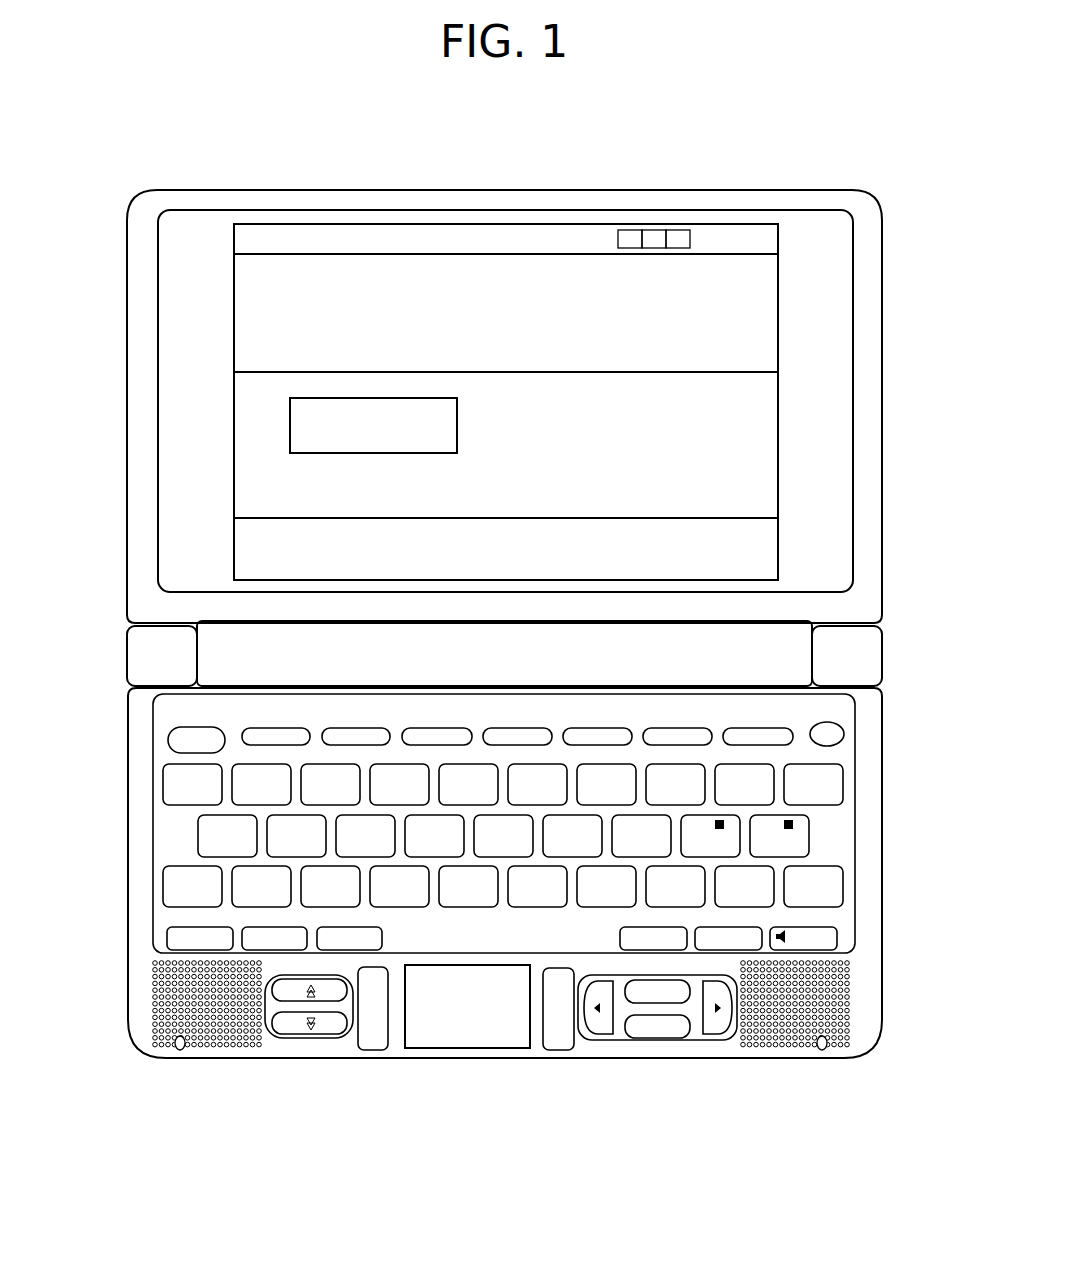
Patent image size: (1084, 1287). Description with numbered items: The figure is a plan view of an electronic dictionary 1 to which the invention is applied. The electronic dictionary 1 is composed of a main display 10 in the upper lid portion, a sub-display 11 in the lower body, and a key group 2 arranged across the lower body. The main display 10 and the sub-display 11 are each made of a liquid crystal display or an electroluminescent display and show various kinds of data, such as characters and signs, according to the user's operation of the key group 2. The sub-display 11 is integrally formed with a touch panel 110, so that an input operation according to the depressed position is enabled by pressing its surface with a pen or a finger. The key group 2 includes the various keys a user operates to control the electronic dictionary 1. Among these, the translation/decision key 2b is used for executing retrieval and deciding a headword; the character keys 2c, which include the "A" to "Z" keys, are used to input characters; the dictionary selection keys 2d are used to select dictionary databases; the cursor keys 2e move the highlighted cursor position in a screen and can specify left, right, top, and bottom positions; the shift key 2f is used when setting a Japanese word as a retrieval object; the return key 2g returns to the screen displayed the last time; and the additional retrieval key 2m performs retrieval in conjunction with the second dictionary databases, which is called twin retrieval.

The electronic dictionary 1 is at (110, 166).
The main display 10 is at (855, 257).
The key group 2 is at (892, 727).
The dictionary selection keys 2d is at (632, 707).
The character keys 2c is at (122, 762).
The shift key 2f is at (160, 903).
The additional retrieval key 2m is at (168, 936).
The return key 2g is at (378, 1043).
The sub-display 11 is at (483, 1050).
The touch panel 110 is at (467, 1006).
The translation/decision key 2b is at (560, 1045).
The cursor keys 2e is at (652, 1040).